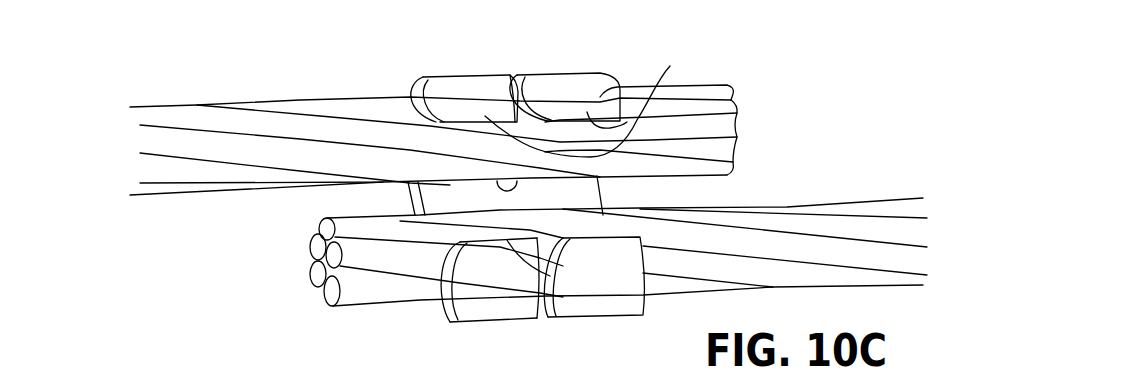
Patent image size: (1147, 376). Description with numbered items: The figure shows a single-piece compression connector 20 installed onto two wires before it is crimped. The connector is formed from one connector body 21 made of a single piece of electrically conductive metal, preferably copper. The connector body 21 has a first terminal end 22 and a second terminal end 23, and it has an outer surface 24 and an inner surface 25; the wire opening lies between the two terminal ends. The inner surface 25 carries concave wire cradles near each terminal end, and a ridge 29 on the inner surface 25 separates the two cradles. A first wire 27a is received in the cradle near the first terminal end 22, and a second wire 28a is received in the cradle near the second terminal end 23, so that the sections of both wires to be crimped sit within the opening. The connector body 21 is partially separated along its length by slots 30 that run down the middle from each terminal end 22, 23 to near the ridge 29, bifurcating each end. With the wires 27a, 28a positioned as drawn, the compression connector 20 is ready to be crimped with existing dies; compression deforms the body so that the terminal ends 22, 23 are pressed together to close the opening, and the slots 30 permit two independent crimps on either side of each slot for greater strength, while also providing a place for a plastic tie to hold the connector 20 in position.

The compression connector 20 is at (612, 45).
The connector body 21 is at (443, 200).
The first terminal end 22 is at (592, 164).
The second terminal end 23 is at (618, 240).
The outer surface 24 is at (594, 101).
The inner surface 25 is at (567, 209).
The first wire 27a is at (212, 177).
The second wire 28a is at (783, 220).
The ridge 29 is at (598, 188).
The slots 30 is at (525, 88).